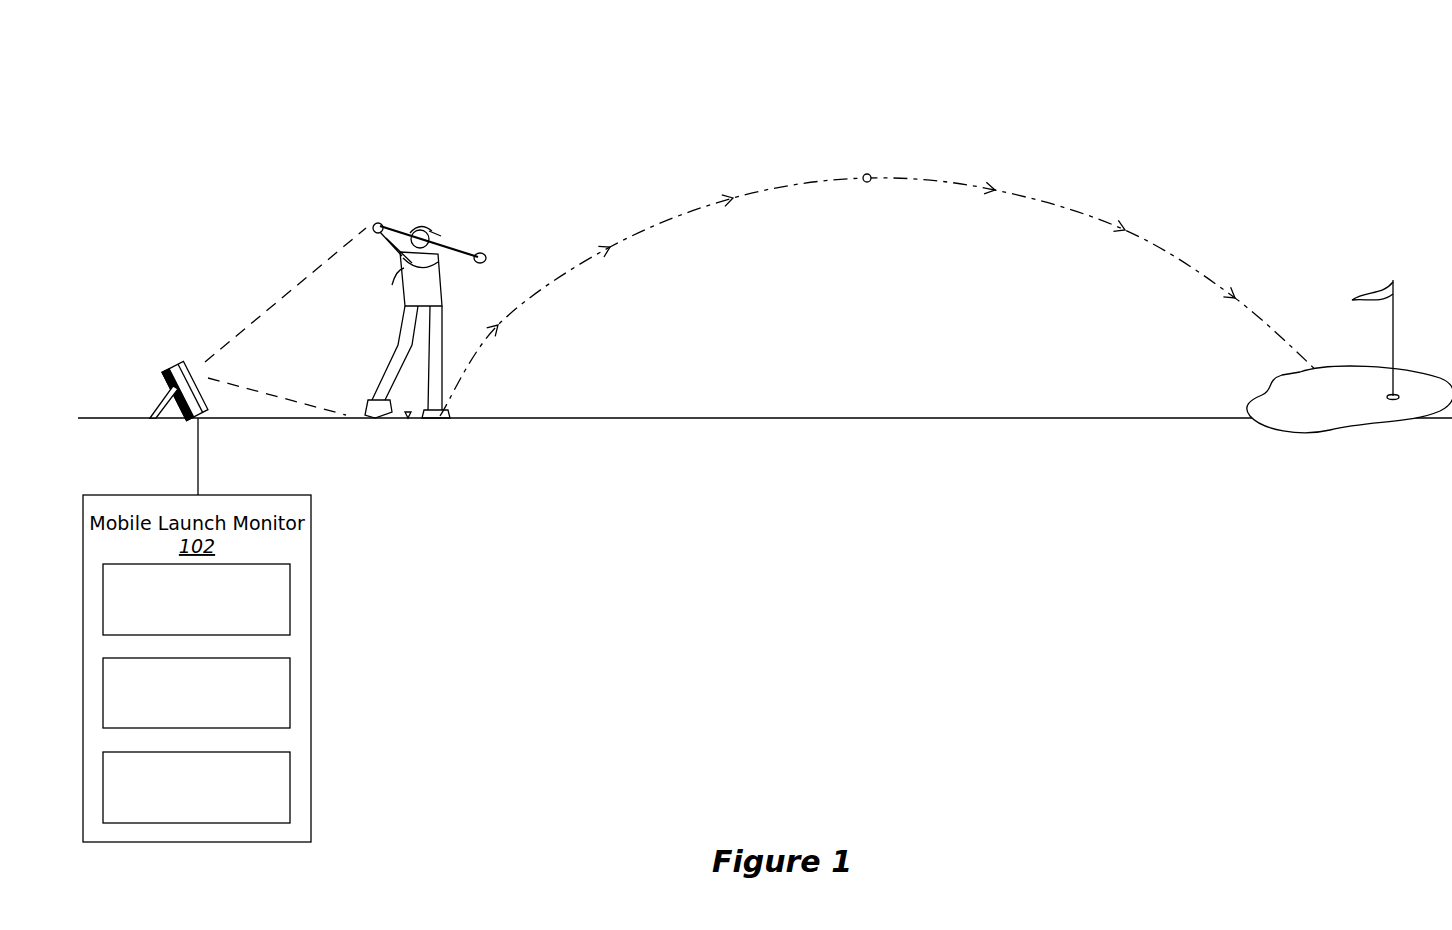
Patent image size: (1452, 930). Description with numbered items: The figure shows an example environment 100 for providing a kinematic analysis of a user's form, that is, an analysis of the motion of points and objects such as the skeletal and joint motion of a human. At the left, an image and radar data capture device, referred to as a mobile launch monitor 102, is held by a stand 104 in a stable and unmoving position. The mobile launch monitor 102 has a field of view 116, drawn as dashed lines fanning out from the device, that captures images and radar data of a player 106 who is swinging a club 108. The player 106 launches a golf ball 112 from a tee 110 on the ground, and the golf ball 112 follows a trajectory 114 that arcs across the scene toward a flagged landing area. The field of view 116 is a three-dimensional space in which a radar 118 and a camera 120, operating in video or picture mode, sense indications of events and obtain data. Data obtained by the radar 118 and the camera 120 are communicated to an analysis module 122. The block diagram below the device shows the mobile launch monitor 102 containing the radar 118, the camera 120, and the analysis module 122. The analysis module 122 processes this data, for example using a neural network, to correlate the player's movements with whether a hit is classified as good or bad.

The environment 100 is at (154, 112).
The mobile launch monitor 102 is at (200, 366).
The stand 104 is at (158, 395).
The player 106 is at (398, 276).
The club 108 is at (482, 255).
The tee 110 is at (406, 419).
The golf ball 112 is at (867, 174).
The trajectory 114 is at (1200, 272).
The field of view 116 is at (268, 295).
The radar 118 is at (196, 599).
The camera 120 is at (196, 693).
The analysis module 122 is at (196, 787).